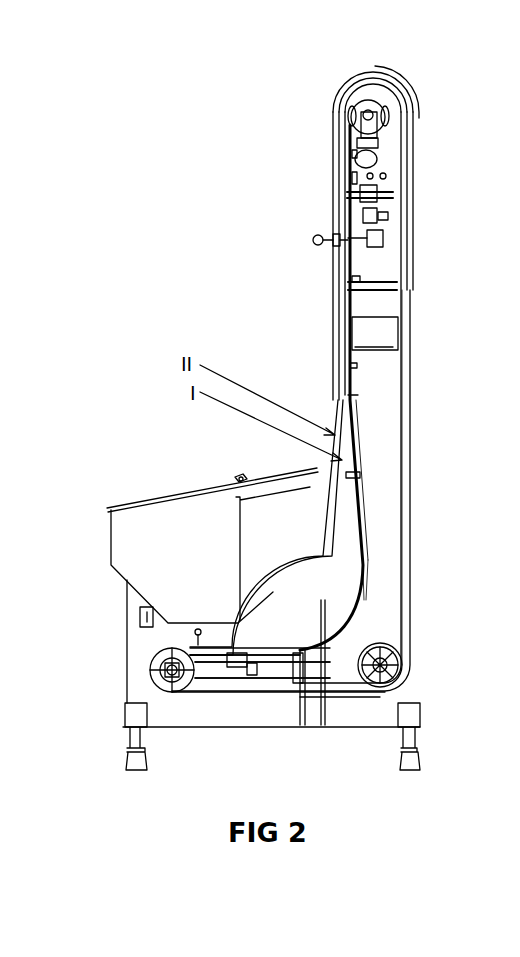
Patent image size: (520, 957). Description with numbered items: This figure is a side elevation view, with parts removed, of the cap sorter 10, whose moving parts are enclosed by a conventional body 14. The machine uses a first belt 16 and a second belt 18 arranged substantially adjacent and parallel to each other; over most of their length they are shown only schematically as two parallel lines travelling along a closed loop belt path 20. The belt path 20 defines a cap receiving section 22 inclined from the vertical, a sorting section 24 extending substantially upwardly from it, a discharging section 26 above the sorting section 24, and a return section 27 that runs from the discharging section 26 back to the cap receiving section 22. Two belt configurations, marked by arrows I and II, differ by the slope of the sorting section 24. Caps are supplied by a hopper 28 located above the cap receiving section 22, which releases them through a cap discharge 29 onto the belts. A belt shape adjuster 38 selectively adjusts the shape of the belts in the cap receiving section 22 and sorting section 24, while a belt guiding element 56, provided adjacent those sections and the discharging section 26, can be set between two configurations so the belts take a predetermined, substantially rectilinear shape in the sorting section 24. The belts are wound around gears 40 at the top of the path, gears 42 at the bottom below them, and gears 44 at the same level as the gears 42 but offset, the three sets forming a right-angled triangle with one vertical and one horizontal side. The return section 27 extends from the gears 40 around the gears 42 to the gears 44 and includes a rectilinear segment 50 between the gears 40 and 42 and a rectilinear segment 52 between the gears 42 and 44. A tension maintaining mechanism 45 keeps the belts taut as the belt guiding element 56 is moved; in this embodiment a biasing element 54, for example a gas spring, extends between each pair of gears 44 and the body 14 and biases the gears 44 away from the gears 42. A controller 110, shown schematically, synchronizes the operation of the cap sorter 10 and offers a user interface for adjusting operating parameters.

The cap sorter 10 is at (209, 240).
The body 14 is at (429, 704).
The first belt 16 is at (318, 468).
The second belt 18 is at (318, 468).
The belt path 20 is at (422, 354).
The cap receiving section 22 is at (363, 600).
The sorting section 24 is at (360, 487).
The discharging section 26 is at (343, 196).
The return section 27 is at (400, 237).
The hopper 28 is at (130, 503).
The cap discharge 29 is at (273, 592).
The belt shape adjuster 38 is at (358, 634).
The gears 40 is at (350, 125).
The gears 42 is at (393, 662).
The gears 44 is at (172, 700).
The tension maintaining mechanism 45 is at (260, 660).
The rectilinear segment 50 is at (403, 448).
The rectilinear segment 52 is at (380, 697).
The biasing element 54 is at (260, 660).
The belt guiding element 56 is at (377, 555).
The controller 110 is at (375, 333).